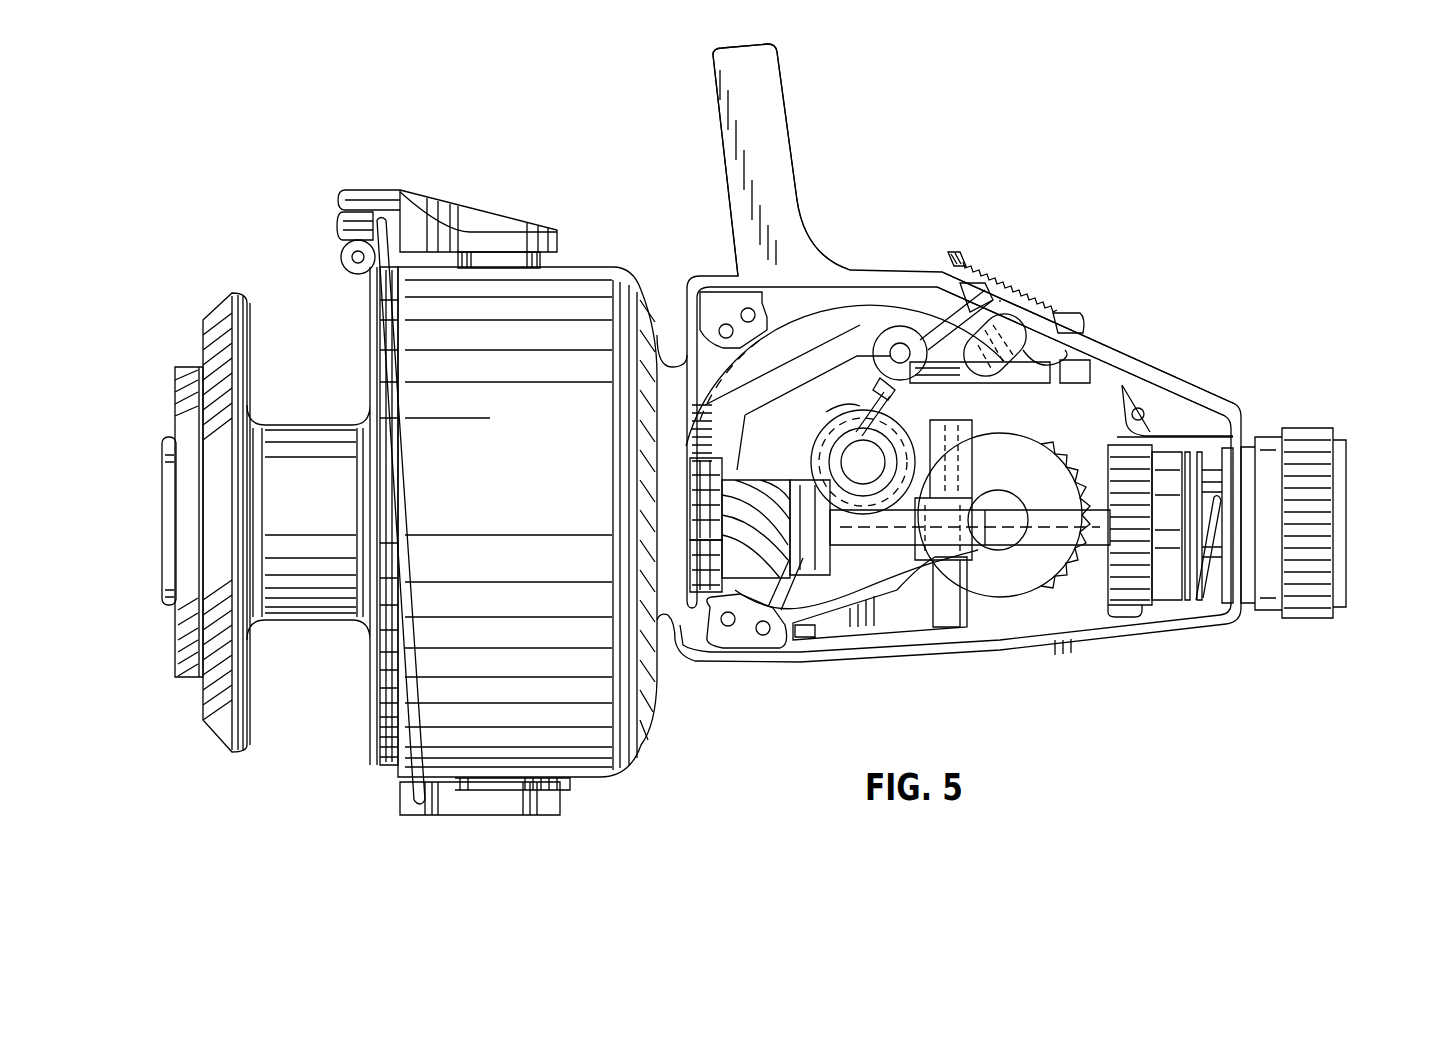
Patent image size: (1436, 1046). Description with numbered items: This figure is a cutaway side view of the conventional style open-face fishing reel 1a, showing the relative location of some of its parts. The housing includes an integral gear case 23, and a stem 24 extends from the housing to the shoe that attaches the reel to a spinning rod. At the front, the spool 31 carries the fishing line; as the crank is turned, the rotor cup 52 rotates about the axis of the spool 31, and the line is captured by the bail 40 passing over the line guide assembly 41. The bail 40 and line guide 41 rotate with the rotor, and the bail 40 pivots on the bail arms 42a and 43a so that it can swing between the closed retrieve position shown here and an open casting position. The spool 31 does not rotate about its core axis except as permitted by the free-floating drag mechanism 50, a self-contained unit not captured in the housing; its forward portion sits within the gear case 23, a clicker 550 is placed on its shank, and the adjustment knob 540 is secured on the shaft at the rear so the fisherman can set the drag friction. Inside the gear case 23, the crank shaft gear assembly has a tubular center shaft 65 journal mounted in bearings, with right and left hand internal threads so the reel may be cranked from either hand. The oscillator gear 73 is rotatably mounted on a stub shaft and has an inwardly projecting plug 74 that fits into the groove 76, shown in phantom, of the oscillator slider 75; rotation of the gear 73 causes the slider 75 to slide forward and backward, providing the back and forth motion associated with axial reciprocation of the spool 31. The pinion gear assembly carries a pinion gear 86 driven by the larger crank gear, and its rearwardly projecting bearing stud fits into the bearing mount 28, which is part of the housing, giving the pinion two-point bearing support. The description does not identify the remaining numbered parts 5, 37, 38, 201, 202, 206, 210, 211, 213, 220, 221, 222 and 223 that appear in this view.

The conventional style open-face fishing reel 1a is at (945, 213).
The anti-reverse lever 5 is at (1005, 317).
The gear case 23 is at (1120, 358).
The stem 24 is at (790, 112).
The bearing mount 28 is at (949, 378).
The spool 31 is at (236, 398).
The spool front flange 37 is at (192, 402).
The drag knob 38 is at (172, 528).
The bail 40 is at (390, 300).
The line guide assembly 41 is at (345, 243).
The bail arm 42a is at (512, 815).
The bail arm 43a is at (490, 218).
The drag mechanism 50 is at (1165, 590).
The rotor cup 52 is at (640, 735).
The tubular center shaft 65 is at (872, 460).
The oscillator gear 73 is at (1018, 585).
The inwardly projecting plug 74 is at (1022, 478).
The oscillator slider 75 is at (956, 565).
The groove 76 is at (1015, 450).
The pinion gear 86 is at (767, 480).
The bevel gear 201 is at (703, 582).
The face gear 202 is at (716, 540).
The drag disc 206 is at (850, 408).
The drive lever 210 is at (826, 335).
The pawl pivot 211 is at (900, 340).
The mounting lug 213 is at (1140, 400).
The slider 220 is at (1080, 322).
The rack teeth 221 is at (1012, 305).
The drum 222 is at (1007, 360).
The spring 223 is at (1062, 352).
The adjustment knob 540 is at (1315, 430).
The clicker 550 is at (1193, 620).